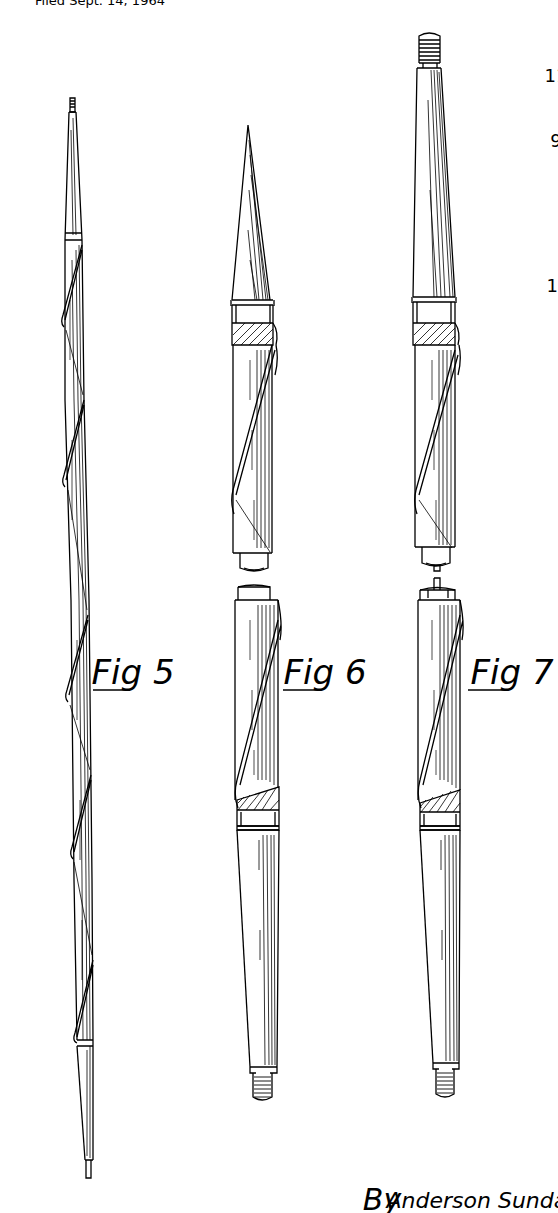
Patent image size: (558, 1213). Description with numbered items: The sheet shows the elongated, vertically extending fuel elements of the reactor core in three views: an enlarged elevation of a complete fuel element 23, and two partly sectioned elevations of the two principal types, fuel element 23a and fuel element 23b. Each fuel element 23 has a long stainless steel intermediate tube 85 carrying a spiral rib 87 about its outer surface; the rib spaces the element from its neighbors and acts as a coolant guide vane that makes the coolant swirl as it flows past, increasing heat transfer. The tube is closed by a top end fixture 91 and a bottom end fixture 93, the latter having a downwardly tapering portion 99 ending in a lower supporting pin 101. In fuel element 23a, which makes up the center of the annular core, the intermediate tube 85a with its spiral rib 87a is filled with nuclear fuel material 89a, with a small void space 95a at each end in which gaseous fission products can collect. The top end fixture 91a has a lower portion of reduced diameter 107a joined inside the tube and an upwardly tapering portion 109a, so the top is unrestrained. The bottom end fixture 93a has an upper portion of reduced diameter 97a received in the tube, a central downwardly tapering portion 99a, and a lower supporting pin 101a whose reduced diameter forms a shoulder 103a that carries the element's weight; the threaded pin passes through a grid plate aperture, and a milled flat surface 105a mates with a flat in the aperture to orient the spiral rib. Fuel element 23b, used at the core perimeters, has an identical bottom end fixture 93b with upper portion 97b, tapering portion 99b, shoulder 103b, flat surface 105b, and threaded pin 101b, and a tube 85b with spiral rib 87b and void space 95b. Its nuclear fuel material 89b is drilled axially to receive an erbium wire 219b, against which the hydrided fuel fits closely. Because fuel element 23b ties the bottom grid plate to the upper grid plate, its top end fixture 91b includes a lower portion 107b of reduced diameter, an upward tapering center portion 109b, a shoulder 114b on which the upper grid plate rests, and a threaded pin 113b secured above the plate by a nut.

In FIG. 5, the fuel element 23 is at (109, 147).
In FIG. 5, the top end fixture 91 is at (80, 195).
In FIG. 5, the intermediate tube 85 is at (81, 336).
In FIG. 5, the spiral rib 87 is at (85, 419).
In FIG. 5, the bottom end fixture 93 is at (93, 1086).
In FIG. 5, the downwardly tapering portion 99 is at (80, 1128).
In FIG. 5, the lower supporting pin 101 is at (93, 1171).
In FIG. 6, the fuel element 23a is at (285, 139).
In FIG. 6, the top end fixture 91a is at (243, 195).
In FIG. 6, the upwardly tapering portion 109a is at (262, 236).
In FIG. 6, the lower portion of reduced diameter 107a is at (232, 303).
In FIG. 6, the void space 95a is at (268, 318).
In FIG. 7, the void space 95a is at (459, 815).
In FIG. 6, the spiral rib 87a is at (276, 377).
In FIG. 6, the intermediate tube 85a is at (268, 470).
In FIG. 6, the nuclear fuel material 89a is at (270, 562).
In FIG. 6, the upper portion of reduced diameter 97a is at (246, 829).
In FIG. 6, the bottom end fixture 93a is at (280, 908).
In FIG. 6, the downwardly tapering portion 99a is at (246, 950).
In FIG. 6, the shoulder 103a is at (251, 1070).
In FIG. 6, the flat surface 105a is at (272, 1078).
In FIG. 6, the lower supporting pin 101a is at (266, 1100).
In FIG. 7, the fuel element 23b is at (474, 81).
In FIG. 7, the threaded pin 113b is at (419, 40).
In FIG. 7, the shoulder 114b is at (422, 65).
In FIG. 7, the top end fixture 91b is at (417, 143).
In FIG. 7, the upward tapering center portion 109b is at (449, 192).
In FIG. 7, the lower portion of reduced diameter 107b is at (414, 301).
In FIG. 7, the void space 95b is at (452, 318).
In FIG. 7, the spiral rib 87b is at (457, 396).
In FIG. 7, the intermediate tube 85b is at (458, 465).
In FIG. 7, the nuclear fuel material 89b is at (452, 556).
In FIG. 7, the erbium wire 219b is at (442, 580).
In FIG. 7, the upper portion of reduced diameter 97b is at (428, 830).
In FIG. 7, the bottom end fixture 93b is at (462, 930).
In FIG. 7, the downwardly tapering portion 99b is at (430, 973).
In FIG. 7, the shoulder 103b is at (434, 1068).
In FIG. 7, the flat surface 105b is at (455, 1075).
In FIG. 7, the threaded pin 101b is at (451, 1097).